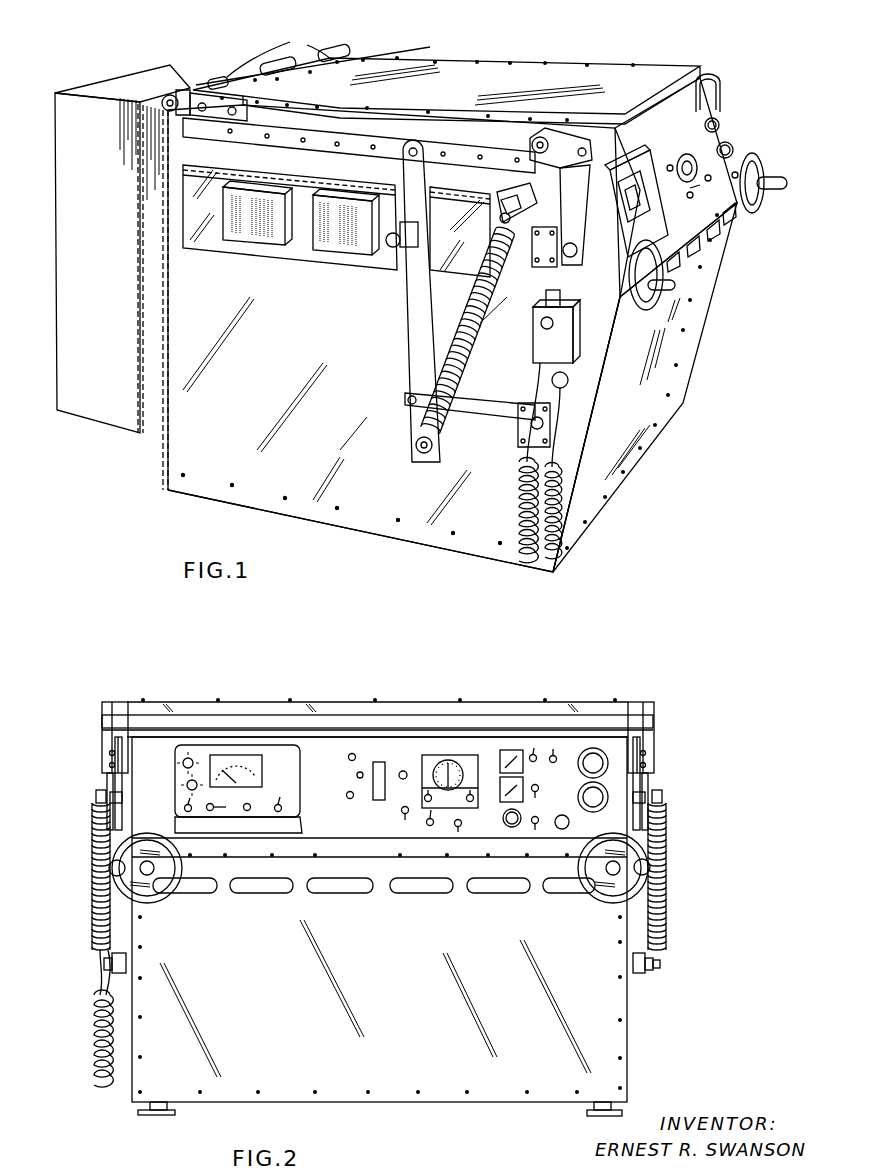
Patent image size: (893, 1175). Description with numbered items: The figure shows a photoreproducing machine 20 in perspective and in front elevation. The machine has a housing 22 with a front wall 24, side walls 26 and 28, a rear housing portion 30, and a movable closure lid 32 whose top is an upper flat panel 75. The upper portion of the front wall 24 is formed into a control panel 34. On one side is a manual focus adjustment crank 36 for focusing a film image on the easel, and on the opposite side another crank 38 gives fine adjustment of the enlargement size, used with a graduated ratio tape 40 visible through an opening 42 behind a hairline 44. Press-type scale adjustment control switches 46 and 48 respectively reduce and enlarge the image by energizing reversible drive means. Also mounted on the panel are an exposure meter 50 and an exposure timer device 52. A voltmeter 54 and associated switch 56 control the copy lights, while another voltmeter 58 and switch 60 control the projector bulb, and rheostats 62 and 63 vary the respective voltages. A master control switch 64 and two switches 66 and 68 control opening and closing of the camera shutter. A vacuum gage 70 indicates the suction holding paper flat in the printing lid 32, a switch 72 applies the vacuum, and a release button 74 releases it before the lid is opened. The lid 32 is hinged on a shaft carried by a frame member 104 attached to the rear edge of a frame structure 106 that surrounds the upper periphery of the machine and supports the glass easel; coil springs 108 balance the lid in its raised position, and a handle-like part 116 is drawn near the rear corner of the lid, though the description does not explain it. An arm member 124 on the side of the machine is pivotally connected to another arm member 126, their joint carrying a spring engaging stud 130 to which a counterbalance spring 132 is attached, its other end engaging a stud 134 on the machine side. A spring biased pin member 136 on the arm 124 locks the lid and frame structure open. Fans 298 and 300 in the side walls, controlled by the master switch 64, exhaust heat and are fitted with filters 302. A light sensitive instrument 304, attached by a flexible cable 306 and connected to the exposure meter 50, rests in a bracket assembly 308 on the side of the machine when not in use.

In FIG. 1, the machine 20 is at (185, 497).
In FIG. 2, the machine 20 is at (632, 1000).
In FIG. 1, the housing 22 is at (370, 537).
In FIG. 2, the housing 22 is at (400, 1100).
In FIG. 1, the front wall 24 is at (688, 397).
In FIG. 2, the front wall 24 is at (414, 1027).
In FIG. 1, the side wall 26 is at (466, 543).
In FIG. 2, the side wall 26 is at (118, 1085).
In FIG. 2, the side wall 28 is at (630, 1057).
In FIG. 1, the rear housing portion 30 is at (92, 420).
In FIG. 1, the closure lid 32 is at (558, 70).
In FIG. 2, the closure lid 32 is at (330, 700).
In FIG. 1, the control panel 34 is at (728, 132).
In FIG. 2, the control panel 34 is at (396, 742).
In FIG. 1, the manual focus adjustment crank 36 is at (645, 311).
In FIG. 2, the manual focus adjustment crank 36 is at (150, 900).
In FIG. 1, the crank 38 is at (763, 200).
In FIG. 2, the crank 38 is at (607, 895).
In FIG. 2, the graduated ratio tape 40 is at (357, 774).
In FIG. 2, the opening 42 is at (400, 779).
In FIG. 2, the hairline 44 is at (380, 780).
In FIG. 2, the scale adjustment control switch 46 is at (349, 756).
In FIG. 2, the scale adjustment control switch 48 is at (347, 796).
In FIG. 1, the exposure meter 50 is at (622, 242).
In FIG. 2, the exposure meter 50 is at (172, 775).
In FIG. 1, the exposure timer device 52 is at (676, 154).
In FIG. 2, the exposure timer device 52 is at (438, 750).
In FIG. 2, the voltmeter 54 is at (507, 747).
In FIG. 2, the switch 56 is at (537, 752).
In FIG. 2, the voltmeter 58 is at (495, 778).
In FIG. 2, the switch 60 is at (538, 786).
In FIG. 2, the rheostat 62 is at (592, 758).
In FIG. 2, the rheostat 63 is at (606, 795).
In FIG. 2, the master control switch 64 is at (405, 815).
In FIG. 2, the switch 66 is at (430, 828).
In FIG. 2, the switch 68 is at (458, 830).
In FIG. 2, the vacuum gage 70 is at (512, 828).
In FIG. 2, the switch 72 is at (537, 826).
In FIG. 2, the release button 74 is at (562, 815).
In FIG. 1, the upper flat panel 75 is at (457, 63).
In FIG. 1, the frame member 104 is at (160, 112).
In FIG. 1, the frame structure 106 is at (232, 147).
In FIG. 1, the coil springs 108 is at (313, 56).
In FIG. 1, the handle 116 is at (712, 76).
In FIG. 1, the arm member 124 is at (410, 345).
In FIG. 1, the arm member 126 is at (470, 415).
In FIG. 1, the spring engaging stud 130 is at (420, 453).
In FIG. 1, the counterbalance spring 132 is at (458, 378).
In FIG. 2, the counterbalance spring 132 is at (668, 878).
In FIG. 1, the stud 134 is at (505, 212).
In FIG. 1, the spring biased pin member 136 is at (395, 250).
In FIG. 1, the fan 298 is at (242, 250).
In FIG. 1, the fan 300 is at (343, 262).
In FIG. 1, the filters 302 is at (275, 242).
In FIG. 1, the light sensitive instrument 304 is at (548, 304).
In FIG. 1, the flexible cable 306 is at (520, 500).
In FIG. 1, the bracket assembly 308 is at (571, 340).